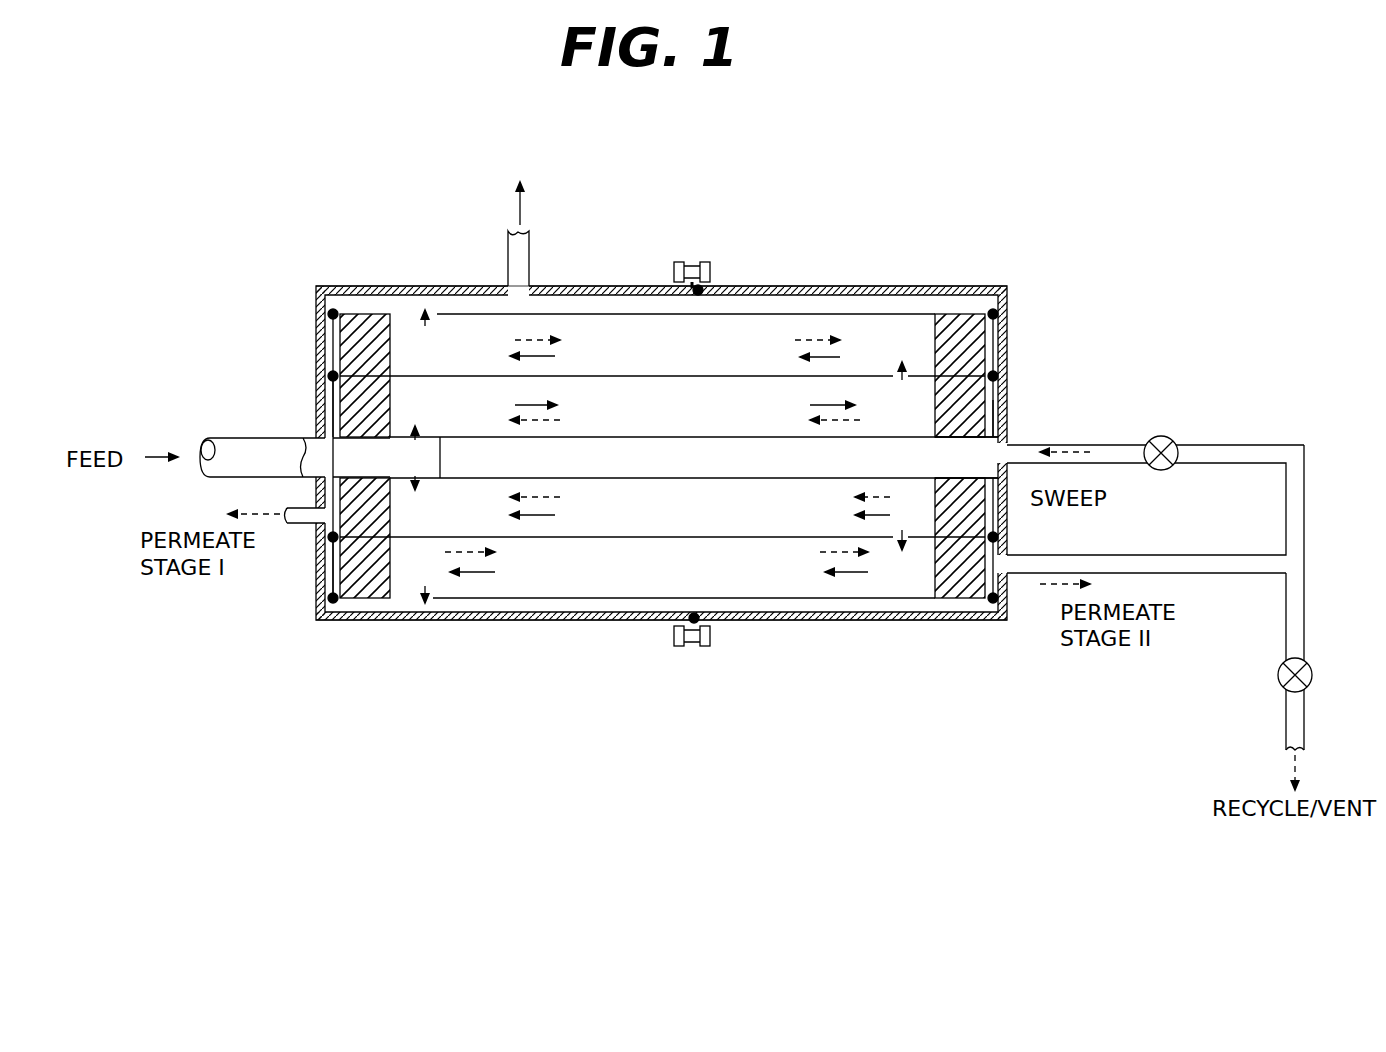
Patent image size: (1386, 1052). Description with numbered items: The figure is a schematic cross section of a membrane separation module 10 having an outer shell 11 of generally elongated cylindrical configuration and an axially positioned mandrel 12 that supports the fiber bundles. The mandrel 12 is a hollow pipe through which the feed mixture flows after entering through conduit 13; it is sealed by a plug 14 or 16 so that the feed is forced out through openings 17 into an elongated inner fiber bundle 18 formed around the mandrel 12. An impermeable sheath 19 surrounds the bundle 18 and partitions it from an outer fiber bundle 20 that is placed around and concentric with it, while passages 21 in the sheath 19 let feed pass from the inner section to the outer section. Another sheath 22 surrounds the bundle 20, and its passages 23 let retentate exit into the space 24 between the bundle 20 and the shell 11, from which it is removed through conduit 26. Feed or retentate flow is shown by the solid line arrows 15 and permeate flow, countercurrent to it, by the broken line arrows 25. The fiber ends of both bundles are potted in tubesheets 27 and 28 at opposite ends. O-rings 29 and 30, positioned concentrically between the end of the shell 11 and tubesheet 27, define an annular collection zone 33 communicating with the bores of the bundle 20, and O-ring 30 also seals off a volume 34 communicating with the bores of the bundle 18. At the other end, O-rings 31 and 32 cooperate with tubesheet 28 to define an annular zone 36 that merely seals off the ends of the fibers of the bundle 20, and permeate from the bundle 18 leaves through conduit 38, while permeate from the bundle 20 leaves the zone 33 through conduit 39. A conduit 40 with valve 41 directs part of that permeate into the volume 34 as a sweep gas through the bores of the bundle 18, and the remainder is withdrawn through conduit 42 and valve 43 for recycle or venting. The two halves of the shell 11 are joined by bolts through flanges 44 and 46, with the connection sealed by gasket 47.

The module 10 is at (800, 268).
The outer shell 11 is at (585, 286).
The mandrel 12 is at (645, 437).
The conduit 13 is at (256, 438).
The plug 14 is at (984, 453).
The solid line arrows 15 is at (518, 364).
The plug 16 is at (443, 470).
The openings 17 is at (408, 474).
The fiber bundle 18 is at (628, 422).
The impermeable sheath 19 is at (722, 375).
The fiber bundle 20 is at (628, 362).
The passages 21 is at (904, 382).
The sheath 22 is at (904, 316).
The passages 23 is at (420, 318).
The space 24 is at (860, 306).
The broken line arrows 25 is at (520, 340).
The conduit 26 is at (531, 252).
The tubesheet 27 is at (922, 420).
The tubesheet 28 is at (392, 400).
The O-ring 29 is at (1008, 304).
The O-ring 30 is at (1000, 376).
The O-ring 31 is at (318, 312).
The O-ring 32 is at (330, 372).
The annular collection zone 33 is at (1000, 345).
The volume 34 is at (1000, 422).
The annular zone 36 is at (320, 568).
The conduit 38 is at (290, 508).
The conduit 39 is at (322, 416).
The conduit 40 is at (1244, 444).
The valve 41 is at (1148, 440).
The conduit 42 is at (1284, 624).
The valve 43 is at (1312, 666).
The flange 44 is at (676, 266).
The flange 46 is at (712, 264).
The gasket 47 is at (706, 288).